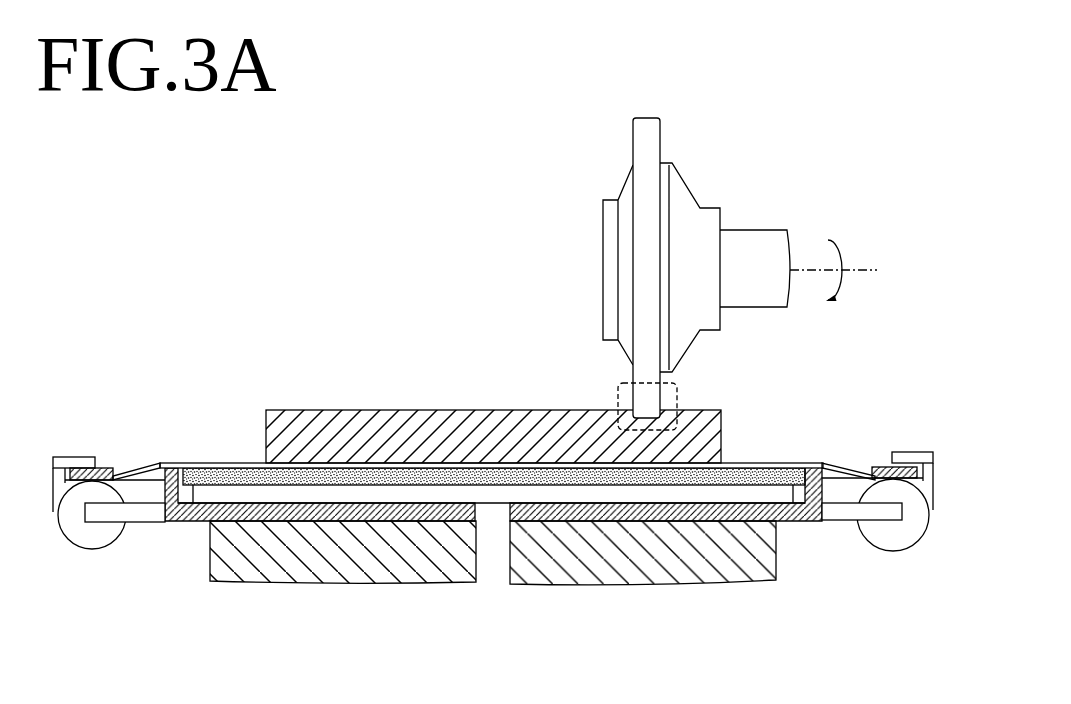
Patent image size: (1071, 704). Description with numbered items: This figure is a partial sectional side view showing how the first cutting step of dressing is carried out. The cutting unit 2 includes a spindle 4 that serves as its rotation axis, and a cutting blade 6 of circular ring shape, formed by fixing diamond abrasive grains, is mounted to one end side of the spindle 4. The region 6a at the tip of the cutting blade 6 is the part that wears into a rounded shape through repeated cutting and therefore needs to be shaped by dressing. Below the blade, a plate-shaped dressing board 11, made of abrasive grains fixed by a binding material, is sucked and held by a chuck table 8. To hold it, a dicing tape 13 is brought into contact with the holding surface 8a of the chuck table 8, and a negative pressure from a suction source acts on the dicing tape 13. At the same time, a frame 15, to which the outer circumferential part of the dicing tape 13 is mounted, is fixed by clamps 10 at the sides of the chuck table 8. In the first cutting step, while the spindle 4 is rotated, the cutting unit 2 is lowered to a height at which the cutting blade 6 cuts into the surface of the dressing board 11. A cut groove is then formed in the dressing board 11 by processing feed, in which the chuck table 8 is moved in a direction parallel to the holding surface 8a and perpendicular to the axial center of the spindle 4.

The cutting unit 2 is at (607, 156).
The spindle 4 is at (758, 242).
The cutting blade 6 is at (652, 132).
The region of the tip of the cutting blade 6a is at (678, 397).
The chuck table 8 is at (208, 597).
The holding surface 8a is at (205, 466).
The clamp 10 is at (72, 460).
The dressing board 11 is at (378, 418).
The dicing tape 13 is at (788, 462).
The frame 15 is at (882, 462).